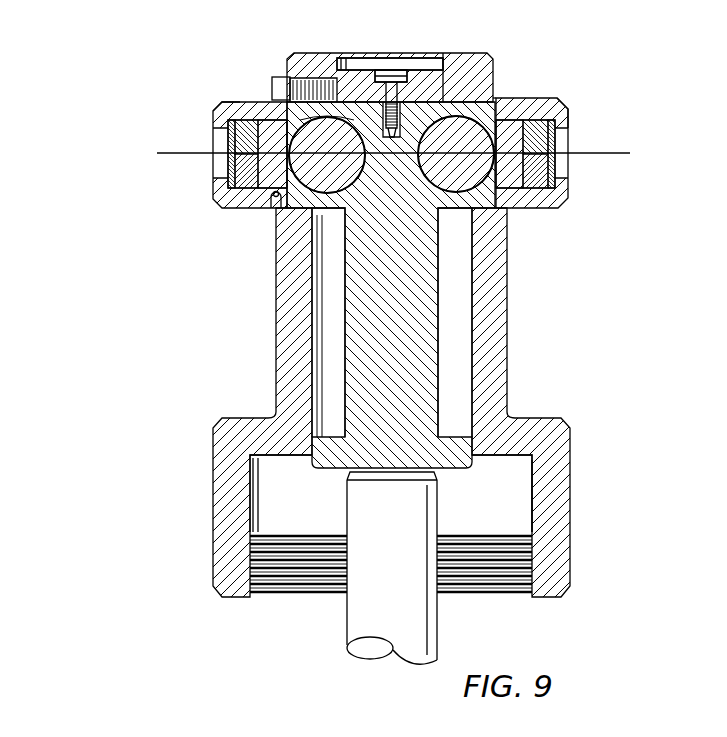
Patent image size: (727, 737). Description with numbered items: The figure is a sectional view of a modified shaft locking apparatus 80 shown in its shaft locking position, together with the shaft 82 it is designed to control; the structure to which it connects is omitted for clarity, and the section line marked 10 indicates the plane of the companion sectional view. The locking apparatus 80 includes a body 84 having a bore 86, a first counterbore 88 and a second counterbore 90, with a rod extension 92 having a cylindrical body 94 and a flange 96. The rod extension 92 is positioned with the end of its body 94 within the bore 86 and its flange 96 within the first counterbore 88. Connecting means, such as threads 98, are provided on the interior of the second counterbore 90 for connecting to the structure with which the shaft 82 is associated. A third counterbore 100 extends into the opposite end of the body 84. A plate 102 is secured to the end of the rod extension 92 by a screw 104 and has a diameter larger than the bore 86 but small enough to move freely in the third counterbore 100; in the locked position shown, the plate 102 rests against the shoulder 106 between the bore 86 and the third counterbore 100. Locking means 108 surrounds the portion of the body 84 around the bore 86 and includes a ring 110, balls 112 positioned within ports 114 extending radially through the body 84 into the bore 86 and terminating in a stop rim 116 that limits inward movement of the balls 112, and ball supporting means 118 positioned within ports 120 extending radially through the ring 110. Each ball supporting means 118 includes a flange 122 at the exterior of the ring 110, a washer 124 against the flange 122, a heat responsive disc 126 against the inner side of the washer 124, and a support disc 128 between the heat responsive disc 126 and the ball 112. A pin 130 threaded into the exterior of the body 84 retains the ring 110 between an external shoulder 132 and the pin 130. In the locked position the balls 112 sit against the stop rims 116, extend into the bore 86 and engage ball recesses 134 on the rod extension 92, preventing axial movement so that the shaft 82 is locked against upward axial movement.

The section line 10- 10 is at (157, 153).
The shaft locking apparatus 80 is at (185, 500).
The shaft 82 is at (349, 650).
The body 84 is at (215, 543).
The bore 86 is at (345, 215).
The first counterbore 88 is at (462, 310).
The second counterbore 90 is at (525, 495).
The rod extension 92 is at (347, 380).
The cylindrical body 94 is at (347, 340).
The flange 96 is at (452, 468).
The threads 98 is at (517, 573).
The third counterbore 100 is at (437, 53).
The plate 102 is at (348, 62).
The screw 104 is at (395, 70).
The shoulder 106 is at (338, 105).
The locking means 108 is at (598, 175).
The ring 110 is at (563, 103).
The balls 112 is at (272, 208).
The ports 114 is at (523, 98).
The stop rim 116 is at (496, 92).
The ball supporting means 118 is at (132, 160).
The ports 120 is at (256, 190).
The flange 122 is at (258, 167).
The washer 124 is at (236, 170).
The heat responsive disc 126 is at (245, 137).
The support disc 128 is at (292, 121).
The pin 130 is at (282, 77).
The external shoulder 132 is at (265, 212).
The ball recesses 134 is at (345, 130).